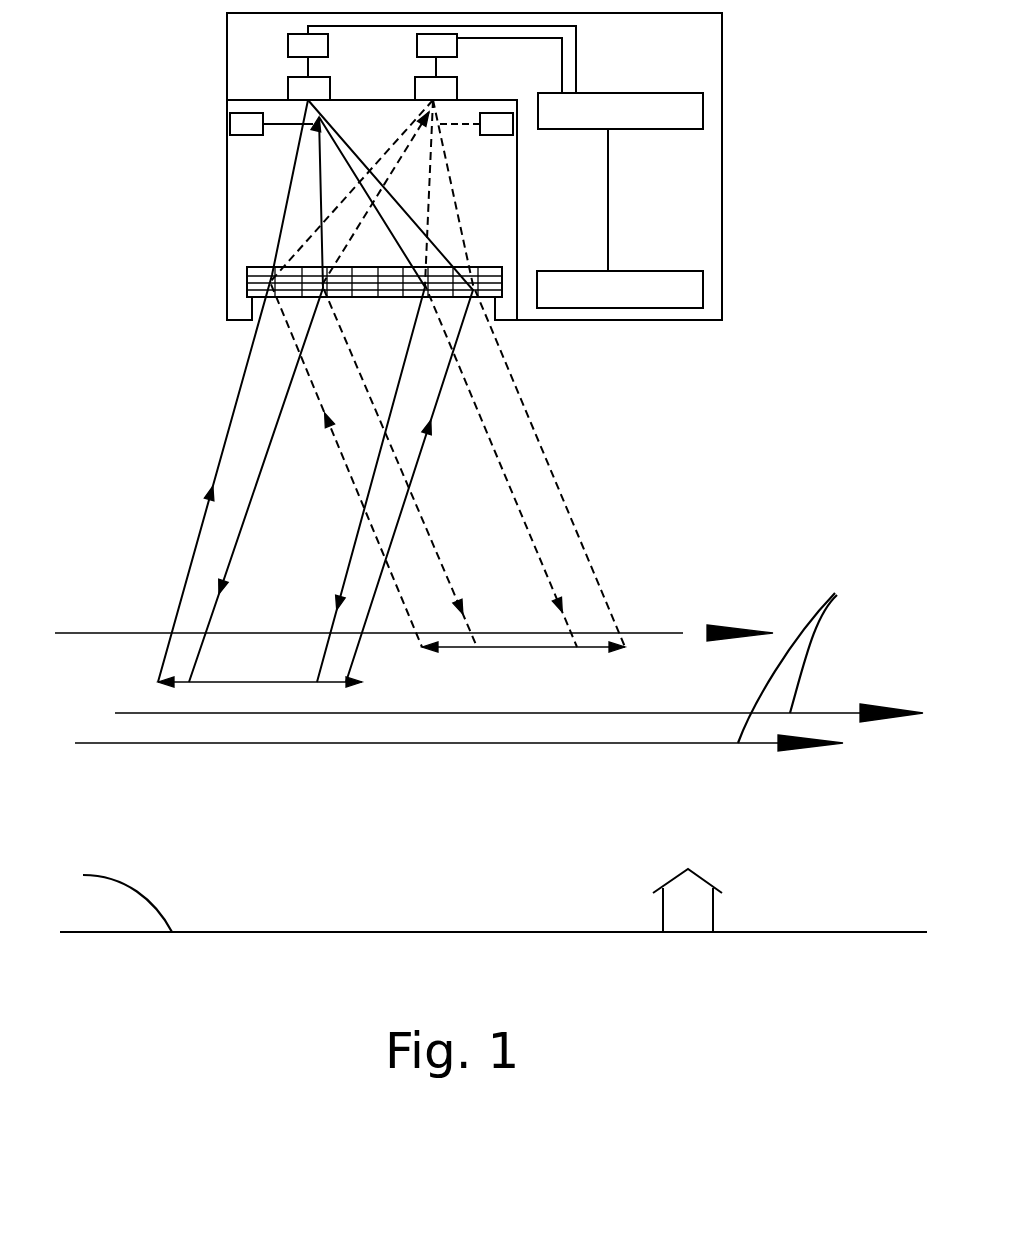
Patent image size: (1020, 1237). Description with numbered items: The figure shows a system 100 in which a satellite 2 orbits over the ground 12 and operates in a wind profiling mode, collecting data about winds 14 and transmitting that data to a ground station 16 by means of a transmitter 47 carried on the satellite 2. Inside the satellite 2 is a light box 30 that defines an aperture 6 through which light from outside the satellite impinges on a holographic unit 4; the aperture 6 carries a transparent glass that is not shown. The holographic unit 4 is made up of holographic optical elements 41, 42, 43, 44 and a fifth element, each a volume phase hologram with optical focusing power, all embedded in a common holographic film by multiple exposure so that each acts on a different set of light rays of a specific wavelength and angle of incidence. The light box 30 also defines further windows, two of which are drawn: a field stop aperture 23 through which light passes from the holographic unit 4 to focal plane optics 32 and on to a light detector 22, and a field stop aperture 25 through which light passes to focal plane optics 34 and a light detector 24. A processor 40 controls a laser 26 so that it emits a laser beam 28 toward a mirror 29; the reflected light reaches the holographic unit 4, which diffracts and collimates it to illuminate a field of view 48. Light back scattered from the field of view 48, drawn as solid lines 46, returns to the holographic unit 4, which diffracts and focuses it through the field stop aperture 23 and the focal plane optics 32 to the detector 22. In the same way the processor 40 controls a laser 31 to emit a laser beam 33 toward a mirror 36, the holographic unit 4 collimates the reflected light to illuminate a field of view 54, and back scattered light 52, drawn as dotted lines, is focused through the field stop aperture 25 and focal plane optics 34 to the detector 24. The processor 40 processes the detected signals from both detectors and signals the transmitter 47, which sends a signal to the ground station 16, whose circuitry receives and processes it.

The satellite 2 is at (240, 322).
The holographic unit 4 is at (272, 254).
The aperture 6 is at (378, 312).
The ground 12 is at (112, 899).
The winds 14 is at (683, 633).
The ground station 16 is at (687, 900).
The light detector 22 is at (432, 59).
The field stop aperture 23 is at (300, 100).
The light detector 24 is at (489, 63).
The field stop aperture 25 is at (456, 100).
The laser 26 is at (246, 124).
The laser beam 28 is at (277, 125).
The mirror 29 is at (331, 112).
The light box 30 is at (242, 97).
The laser 31 is at (496, 124).
The focal plane optics 32 is at (309, 88).
The laser beam 33 is at (466, 132).
The focal plane optics 34 is at (436, 88).
The mirror 36 is at (422, 118).
The processor 40 is at (620, 182).
The holographic optical element 41 is at (247, 280).
The holographic optical element 42 is at (339, 282).
The holographic optical element 43 is at (390, 282).
The holographic optical element 44 is at (440, 282).
The back scattered laser light 46 is at (407, 472).
The transmitter 47 is at (620, 289).
The field of view 48 is at (283, 682).
The back scattered laser light 52 is at (600, 588).
The field of view 54 is at (515, 647).
The system 100 is at (395, 983).